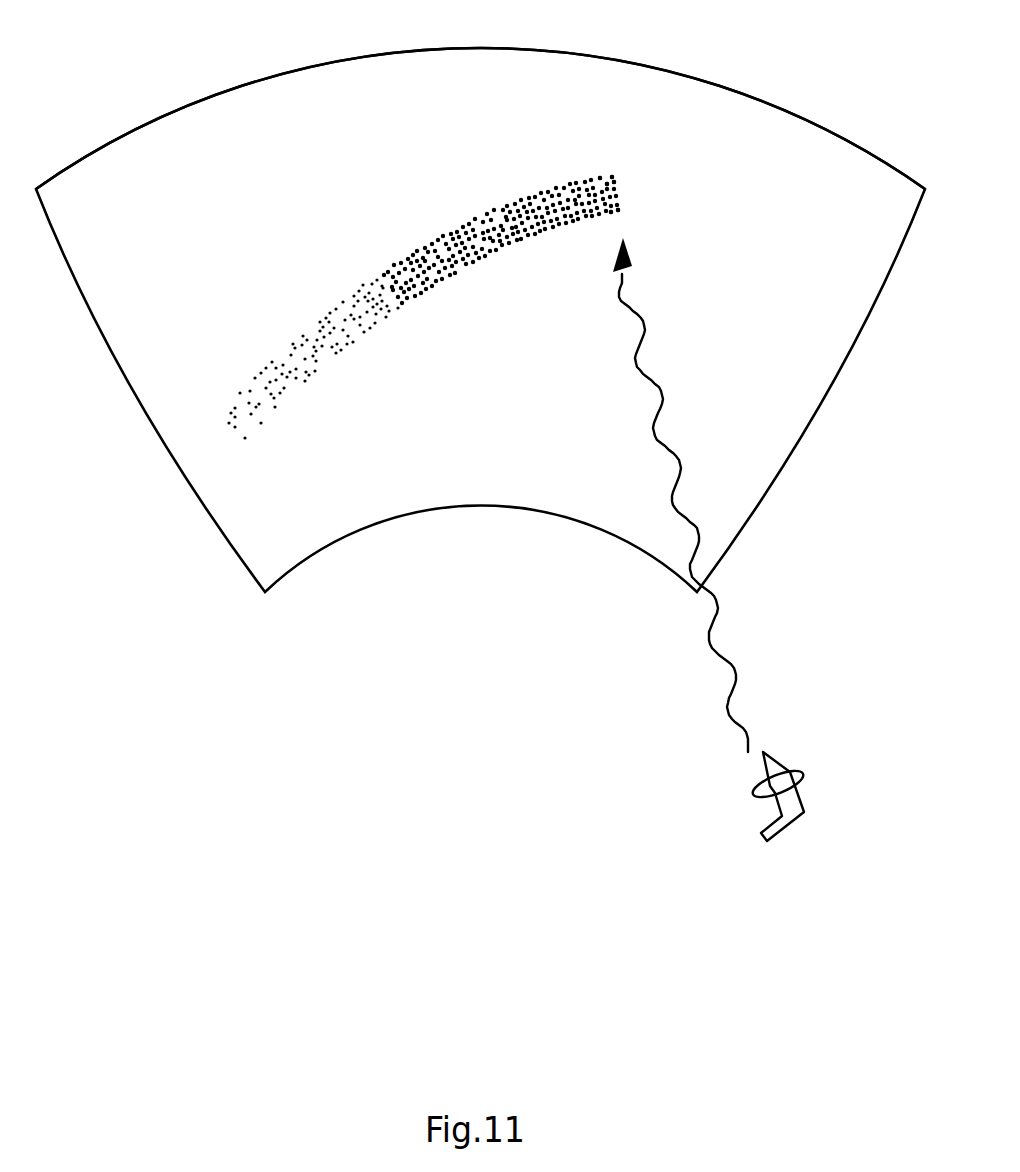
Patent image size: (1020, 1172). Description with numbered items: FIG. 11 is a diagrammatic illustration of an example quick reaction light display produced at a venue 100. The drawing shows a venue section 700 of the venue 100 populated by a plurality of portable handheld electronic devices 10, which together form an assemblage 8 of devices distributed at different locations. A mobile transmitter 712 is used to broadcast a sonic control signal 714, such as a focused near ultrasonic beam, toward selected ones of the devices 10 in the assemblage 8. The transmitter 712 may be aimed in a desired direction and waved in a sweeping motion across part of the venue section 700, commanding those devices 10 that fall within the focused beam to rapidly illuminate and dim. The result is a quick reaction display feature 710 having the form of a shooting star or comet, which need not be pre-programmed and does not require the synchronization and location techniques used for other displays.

The venue 100 is at (207, 517).
The venue section 700 is at (650, 77).
The quick reaction display feature 710 is at (467, 210).
The assemblage 8 is at (431, 306).
The portable handheld electronic device 10 is at (606, 176).
The sonic control signal 714 is at (765, 700).
The mobile transmitter 712 is at (804, 838).